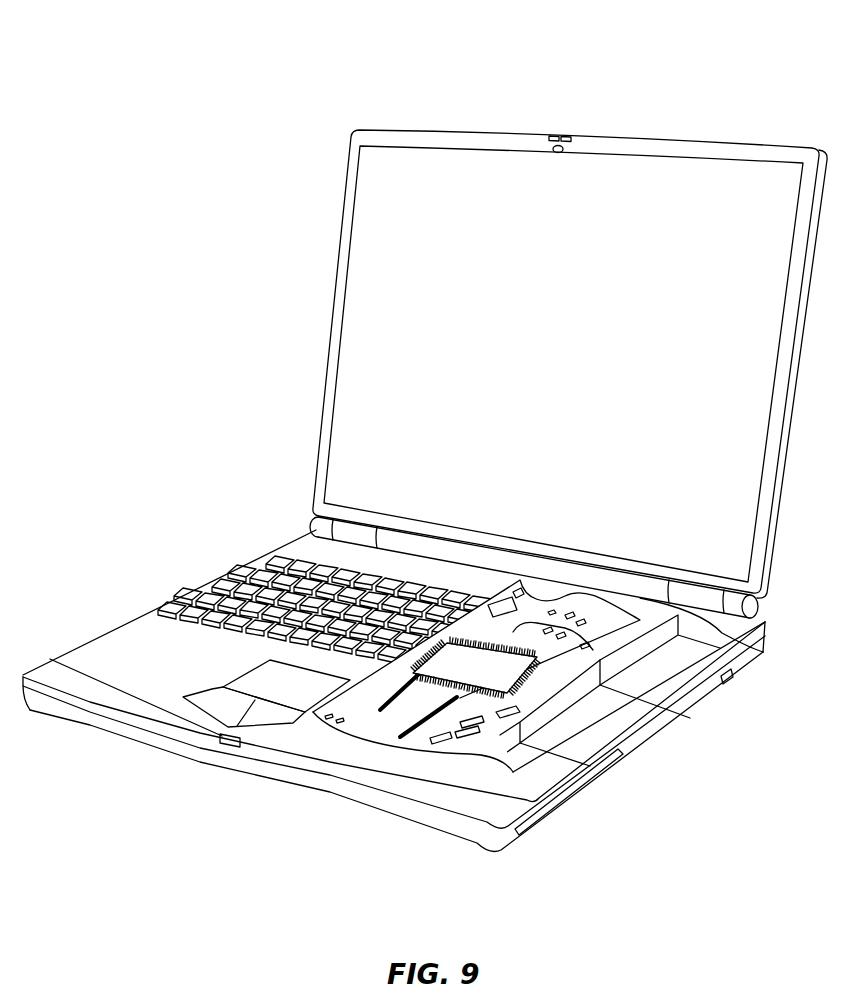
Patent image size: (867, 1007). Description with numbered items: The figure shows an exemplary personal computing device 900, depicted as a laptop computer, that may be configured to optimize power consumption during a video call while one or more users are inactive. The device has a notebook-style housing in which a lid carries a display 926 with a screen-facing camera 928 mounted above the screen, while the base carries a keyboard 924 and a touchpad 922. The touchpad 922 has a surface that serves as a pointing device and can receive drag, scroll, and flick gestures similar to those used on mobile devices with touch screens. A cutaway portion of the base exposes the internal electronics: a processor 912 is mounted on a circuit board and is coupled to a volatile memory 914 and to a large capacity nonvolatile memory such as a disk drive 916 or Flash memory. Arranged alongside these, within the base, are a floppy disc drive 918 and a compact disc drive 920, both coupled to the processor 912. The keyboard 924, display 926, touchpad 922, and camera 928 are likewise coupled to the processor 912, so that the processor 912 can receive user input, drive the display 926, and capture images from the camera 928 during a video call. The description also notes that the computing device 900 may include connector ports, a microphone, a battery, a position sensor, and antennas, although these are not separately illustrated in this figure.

The personal computing device 900 is at (427, 444).
The processor 912 is at (475, 667).
The volatile memory 914 is at (408, 717).
The disk drive 916 is at (527, 757).
The floppy disc drive 918 is at (597, 707).
The compact disc (CD) drive 920 is at (663, 652).
The touchpad 922 is at (248, 684).
The keyboard 924 is at (200, 600).
The display 926 is at (572, 364).
The screen-facing camera 928 is at (561, 153).